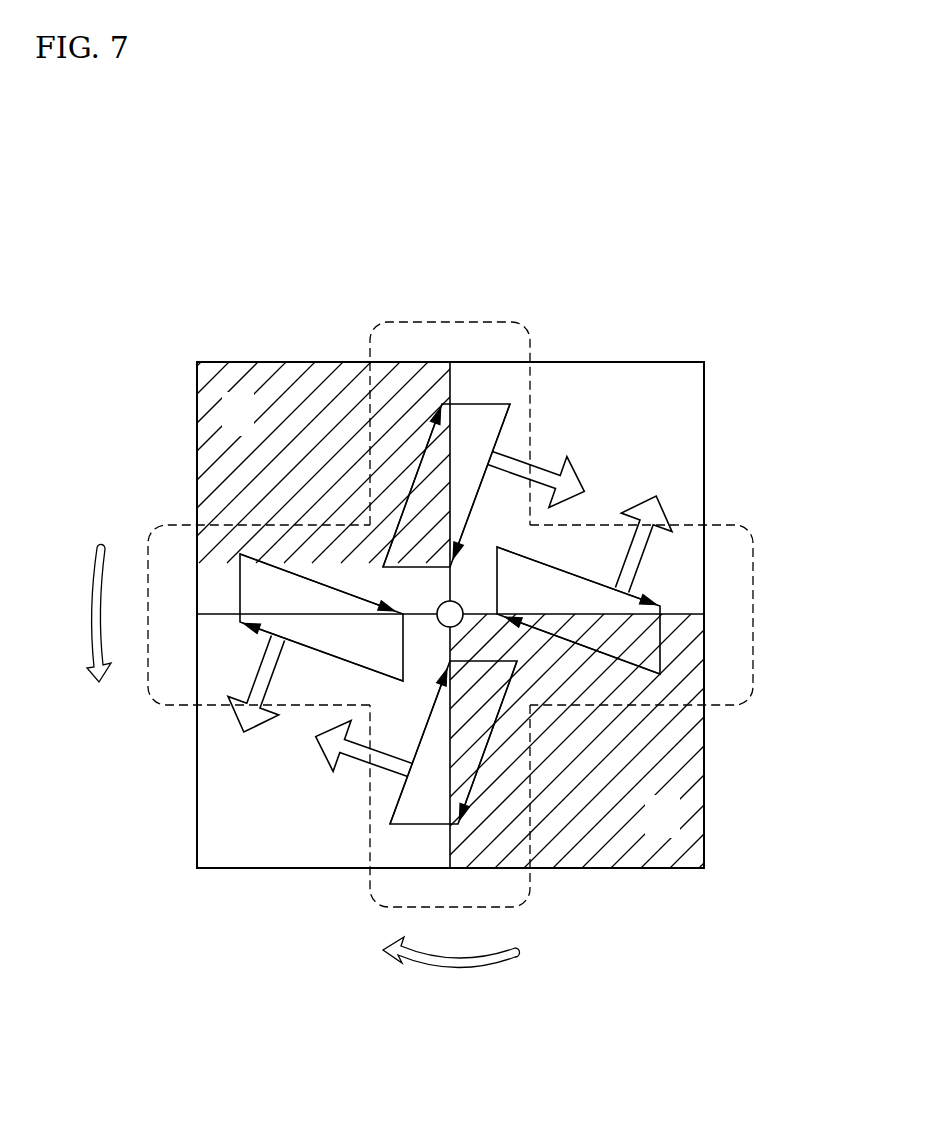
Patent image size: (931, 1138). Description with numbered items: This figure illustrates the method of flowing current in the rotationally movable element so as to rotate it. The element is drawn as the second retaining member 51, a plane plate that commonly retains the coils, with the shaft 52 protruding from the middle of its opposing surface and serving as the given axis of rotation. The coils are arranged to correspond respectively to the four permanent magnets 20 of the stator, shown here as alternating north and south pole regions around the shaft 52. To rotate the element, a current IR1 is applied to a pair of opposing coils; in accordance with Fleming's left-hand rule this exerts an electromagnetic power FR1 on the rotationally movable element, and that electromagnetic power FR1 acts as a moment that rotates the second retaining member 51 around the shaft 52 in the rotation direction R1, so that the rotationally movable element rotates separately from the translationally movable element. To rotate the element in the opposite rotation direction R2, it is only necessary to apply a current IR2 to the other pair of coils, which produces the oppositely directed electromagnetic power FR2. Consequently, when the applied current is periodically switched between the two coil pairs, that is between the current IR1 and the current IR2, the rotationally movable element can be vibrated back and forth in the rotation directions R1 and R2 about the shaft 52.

The permanent magnet 20 is at (698, 408).
The second retaining member 51 is at (750, 640).
The shaft 52 is at (438, 605).
The current IR1 is at (240, 556).
The current IR2 is at (488, 405).
The electromagnetic power FR1 is at (667, 513).
The electromagnetic power FR2 is at (538, 463).
The rotation direction R1 is at (85, 615).
The rotation direction R2 is at (438, 970).